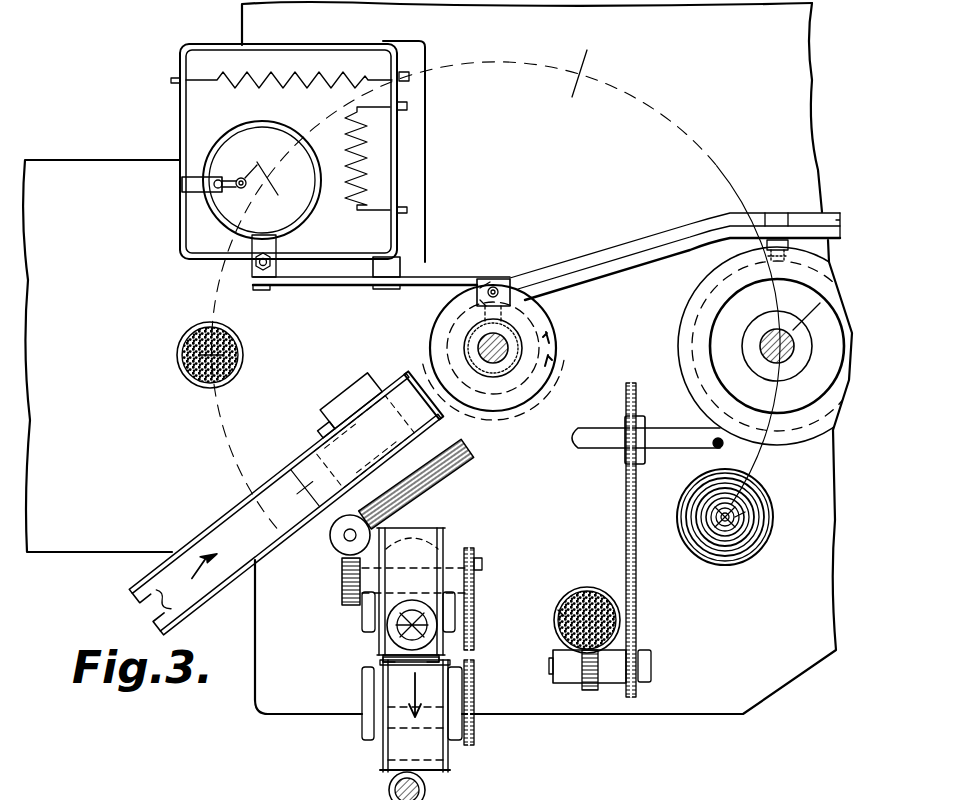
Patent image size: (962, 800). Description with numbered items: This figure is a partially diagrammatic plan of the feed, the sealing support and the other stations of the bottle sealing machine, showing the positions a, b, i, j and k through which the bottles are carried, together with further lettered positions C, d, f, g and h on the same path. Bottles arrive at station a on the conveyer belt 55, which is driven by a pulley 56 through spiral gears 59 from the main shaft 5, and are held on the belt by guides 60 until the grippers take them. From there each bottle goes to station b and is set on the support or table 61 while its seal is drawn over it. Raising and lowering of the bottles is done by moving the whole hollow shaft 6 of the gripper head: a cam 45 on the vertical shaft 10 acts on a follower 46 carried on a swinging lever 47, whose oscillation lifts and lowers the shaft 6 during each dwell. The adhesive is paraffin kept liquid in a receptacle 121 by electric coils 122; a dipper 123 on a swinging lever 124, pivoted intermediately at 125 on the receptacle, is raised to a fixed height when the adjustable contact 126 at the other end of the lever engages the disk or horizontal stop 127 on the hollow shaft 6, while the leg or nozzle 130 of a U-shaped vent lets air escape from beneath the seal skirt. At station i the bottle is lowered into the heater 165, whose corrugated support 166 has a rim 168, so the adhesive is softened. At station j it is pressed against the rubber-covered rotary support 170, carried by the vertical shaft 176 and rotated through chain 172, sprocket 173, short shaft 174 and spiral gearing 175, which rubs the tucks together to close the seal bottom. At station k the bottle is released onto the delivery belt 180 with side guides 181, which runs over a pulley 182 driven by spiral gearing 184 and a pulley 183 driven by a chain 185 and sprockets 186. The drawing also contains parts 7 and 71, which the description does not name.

The receptacle 121 is at (182, 110).
The electric coils 122 is at (275, 73).
The dipper 123 is at (210, 208).
The swinging lever 124 is at (330, 278).
The pivot 125 is at (403, 268).
The adjustable contact 126 is at (497, 290).
The disk or horizontal stop 127 is at (440, 337).
The leg or nozzle of the U-shaped vent tube 130 is at (252, 160).
The hollow shaft 6 is at (525, 345).
The shaft 7 is at (505, 358).
The pulley 56 is at (493, 404).
The swinging lever 47 is at (642, 246).
The follower 46 is at (776, 248).
The cam 45 is at (700, 300).
The vertical shaft 10 is at (783, 356).
The support or table 61 is at (222, 378).
The conveyer belt 55 is at (248, 528).
The guides 60 is at (185, 545).
The spiral gears 59 is at (448, 470).
The pulley 182 is at (400, 528).
The spiral gearing 184 is at (348, 603).
The delivery belt 180 is at (390, 662).
The side guides 181 is at (370, 707).
The pulley 183 is at (430, 772).
The chain 185 is at (445, 632).
The sprockets 186 is at (480, 556).
The main shaft 5 is at (652, 430).
The collar 71 is at (626, 452).
The chain 172 is at (632, 578).
The short shaft 174 is at (644, 656).
The sprocket 173 is at (652, 672).
The spiral gearing 175 is at (590, 692).
The rotary support 170 is at (558, 632).
The vertical shaft 176 is at (594, 588).
The rim 168 is at (680, 510).
The corrugated support 166 is at (742, 522).
The heater 165 is at (738, 536).
The station a is at (262, 520).
The station b is at (188, 345).
The point C is at (263, 191).
The point d is at (408, 78).
The point f is at (587, 73).
The point g is at (752, 140).
The point h is at (806, 309).
The station i is at (744, 512).
The station j is at (562, 618).
The station k is at (405, 652).